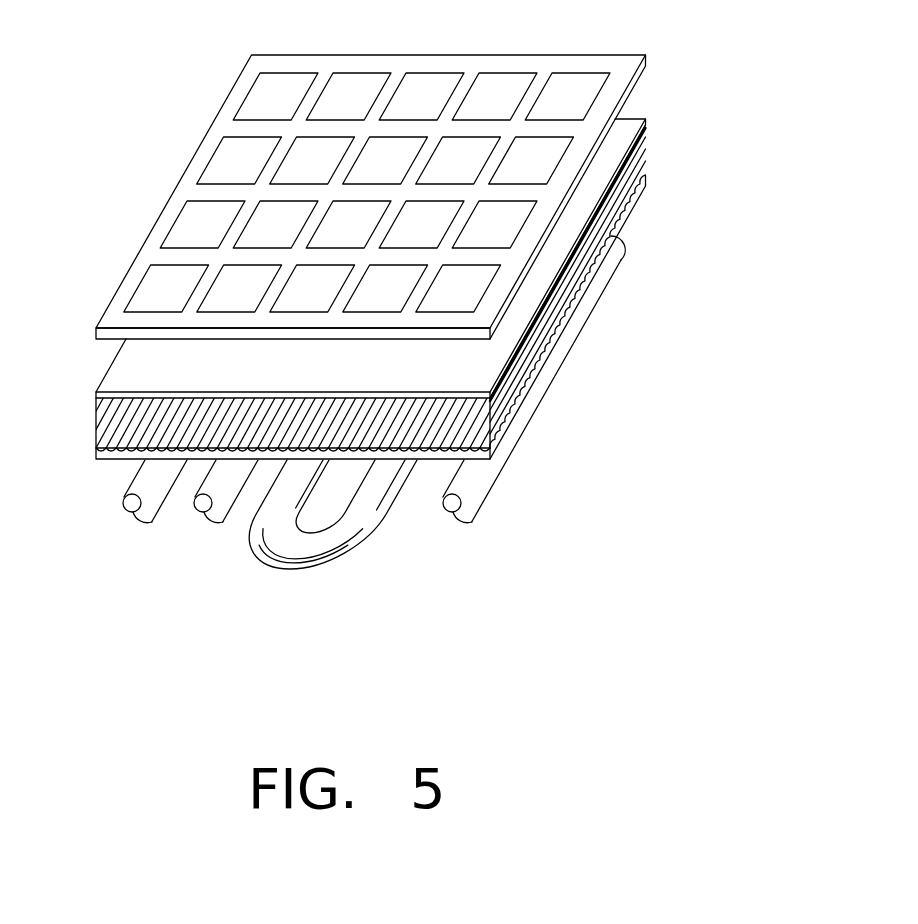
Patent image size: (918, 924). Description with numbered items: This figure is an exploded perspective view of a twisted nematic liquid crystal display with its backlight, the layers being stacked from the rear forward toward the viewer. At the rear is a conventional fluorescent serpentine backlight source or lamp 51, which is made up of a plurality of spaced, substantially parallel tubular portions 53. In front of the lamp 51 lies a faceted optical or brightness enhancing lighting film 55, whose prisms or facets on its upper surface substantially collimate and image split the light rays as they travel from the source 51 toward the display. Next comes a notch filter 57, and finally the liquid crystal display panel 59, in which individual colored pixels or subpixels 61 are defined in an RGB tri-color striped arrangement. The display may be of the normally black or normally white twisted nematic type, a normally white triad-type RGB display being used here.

The serpentine backlight source 51 is at (283, 537).
The tubular portions 53 is at (140, 492).
The faceted collimating film 55 is at (637, 172).
The notch filter 57 is at (623, 132).
The liquid crystal display panel 59 is at (623, 68).
The colored pixels 61 is at (270, 97).